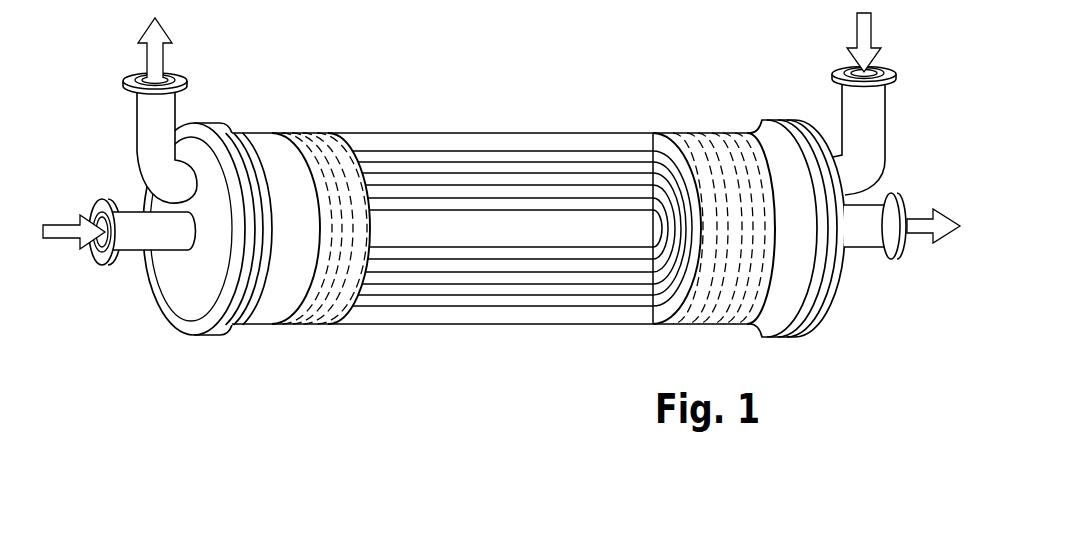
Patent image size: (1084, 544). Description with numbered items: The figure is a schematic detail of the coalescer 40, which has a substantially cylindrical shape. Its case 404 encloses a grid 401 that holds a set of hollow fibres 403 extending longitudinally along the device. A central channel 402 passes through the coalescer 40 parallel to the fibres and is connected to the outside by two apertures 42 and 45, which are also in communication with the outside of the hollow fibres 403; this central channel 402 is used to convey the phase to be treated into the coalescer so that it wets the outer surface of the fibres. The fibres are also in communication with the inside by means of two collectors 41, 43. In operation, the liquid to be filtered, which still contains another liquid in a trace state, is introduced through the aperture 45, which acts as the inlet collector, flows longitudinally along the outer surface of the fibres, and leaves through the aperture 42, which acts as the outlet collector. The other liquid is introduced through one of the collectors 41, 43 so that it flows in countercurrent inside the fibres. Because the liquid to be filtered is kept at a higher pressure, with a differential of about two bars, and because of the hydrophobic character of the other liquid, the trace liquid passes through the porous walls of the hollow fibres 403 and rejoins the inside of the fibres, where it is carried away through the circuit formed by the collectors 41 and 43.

The coalescer 40 is at (501, 213).
The collector 41 is at (864, 125).
The aperture 42 is at (873, 227).
The collector 43 is at (152, 142).
The aperture 45 is at (158, 234).
The grid 401 is at (298, 137).
The central channel 402 is at (445, 227).
The hollow fibres 403 is at (517, 157).
The case 404 is at (753, 144).